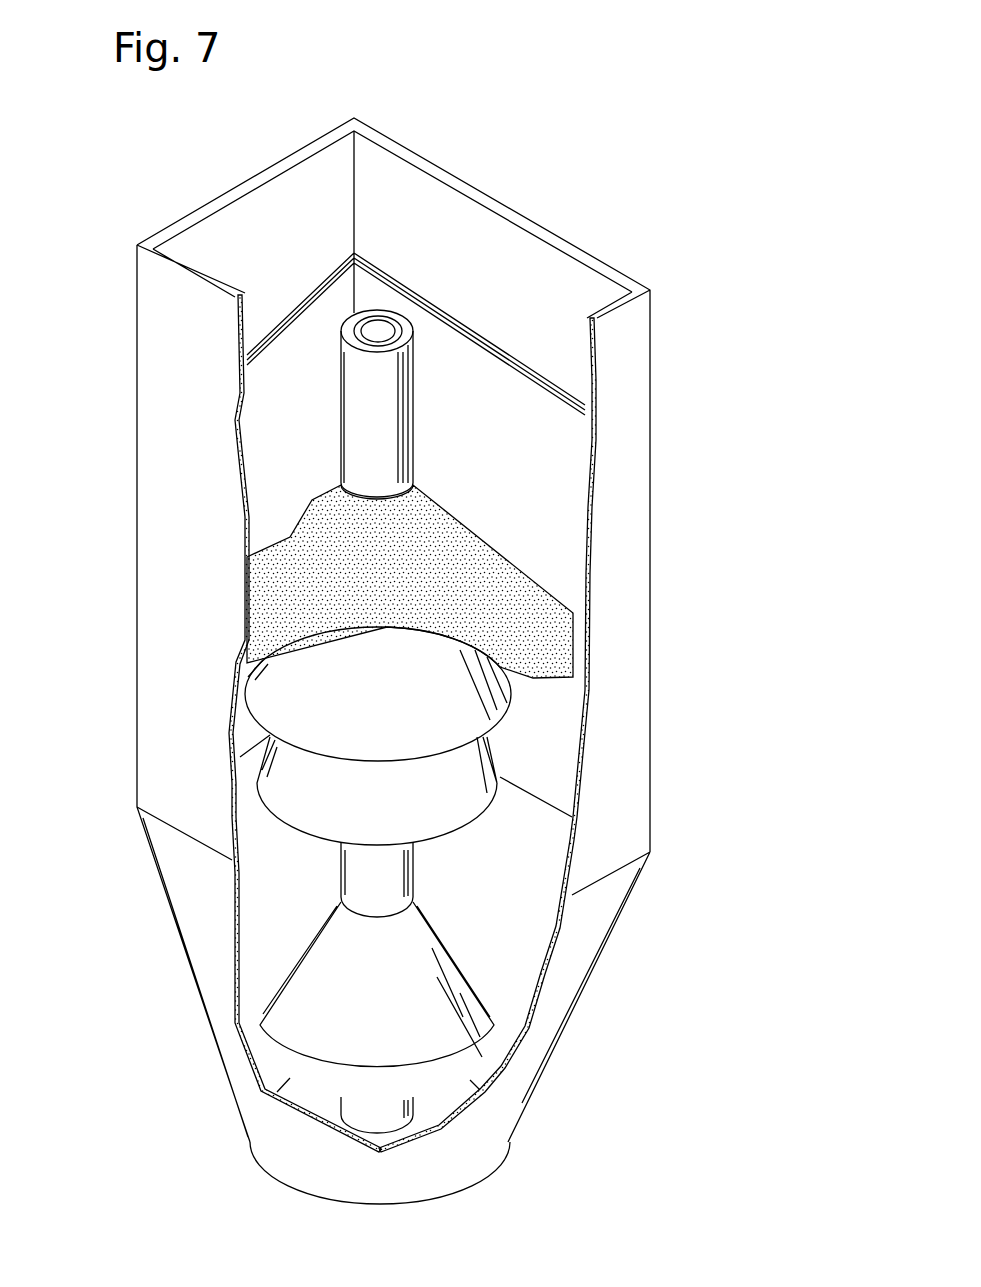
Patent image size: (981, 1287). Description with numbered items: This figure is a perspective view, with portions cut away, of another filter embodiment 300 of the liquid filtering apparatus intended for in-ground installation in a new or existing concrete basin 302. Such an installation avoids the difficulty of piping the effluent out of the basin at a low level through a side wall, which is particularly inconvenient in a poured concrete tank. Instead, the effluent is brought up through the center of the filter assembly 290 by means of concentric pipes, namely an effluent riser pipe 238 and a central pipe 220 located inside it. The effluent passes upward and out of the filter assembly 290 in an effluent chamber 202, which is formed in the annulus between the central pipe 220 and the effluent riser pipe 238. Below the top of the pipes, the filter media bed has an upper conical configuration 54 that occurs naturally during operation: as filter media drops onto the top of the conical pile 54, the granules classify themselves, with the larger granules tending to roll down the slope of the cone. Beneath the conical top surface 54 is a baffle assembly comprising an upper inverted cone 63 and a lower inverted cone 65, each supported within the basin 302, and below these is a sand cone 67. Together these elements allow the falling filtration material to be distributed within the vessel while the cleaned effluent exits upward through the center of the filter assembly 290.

The embodiment 300 is at (687, 340).
The concrete basin 302 is at (163, 582).
The filter assembly 290 is at (513, 490).
The effluent chamber 202 is at (342, 327).
The central pipe 220 is at (402, 328).
The effluent riser pipe 238 is at (412, 403).
The upper conical configuration 54 is at (540, 582).
The upper inverted cone 63 is at (433, 732).
The lower inverted cone 65 is at (433, 817).
The sand cone 67 is at (433, 1053).